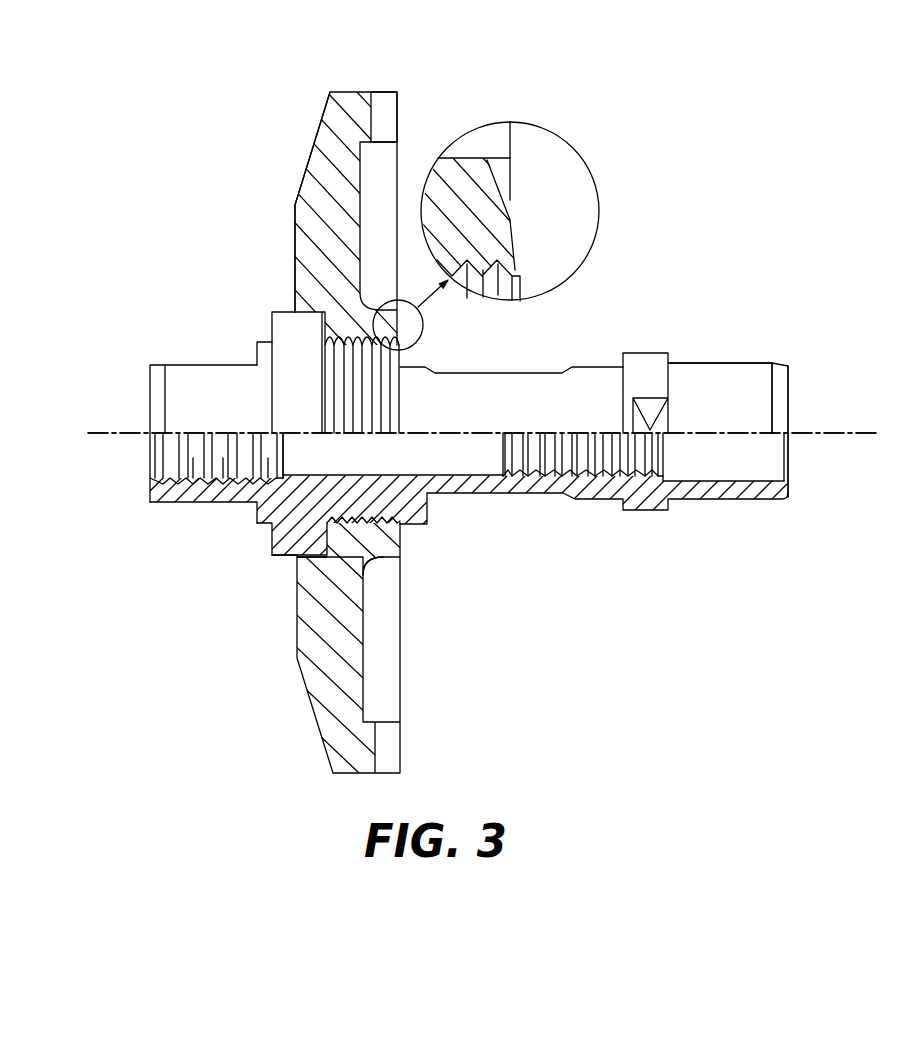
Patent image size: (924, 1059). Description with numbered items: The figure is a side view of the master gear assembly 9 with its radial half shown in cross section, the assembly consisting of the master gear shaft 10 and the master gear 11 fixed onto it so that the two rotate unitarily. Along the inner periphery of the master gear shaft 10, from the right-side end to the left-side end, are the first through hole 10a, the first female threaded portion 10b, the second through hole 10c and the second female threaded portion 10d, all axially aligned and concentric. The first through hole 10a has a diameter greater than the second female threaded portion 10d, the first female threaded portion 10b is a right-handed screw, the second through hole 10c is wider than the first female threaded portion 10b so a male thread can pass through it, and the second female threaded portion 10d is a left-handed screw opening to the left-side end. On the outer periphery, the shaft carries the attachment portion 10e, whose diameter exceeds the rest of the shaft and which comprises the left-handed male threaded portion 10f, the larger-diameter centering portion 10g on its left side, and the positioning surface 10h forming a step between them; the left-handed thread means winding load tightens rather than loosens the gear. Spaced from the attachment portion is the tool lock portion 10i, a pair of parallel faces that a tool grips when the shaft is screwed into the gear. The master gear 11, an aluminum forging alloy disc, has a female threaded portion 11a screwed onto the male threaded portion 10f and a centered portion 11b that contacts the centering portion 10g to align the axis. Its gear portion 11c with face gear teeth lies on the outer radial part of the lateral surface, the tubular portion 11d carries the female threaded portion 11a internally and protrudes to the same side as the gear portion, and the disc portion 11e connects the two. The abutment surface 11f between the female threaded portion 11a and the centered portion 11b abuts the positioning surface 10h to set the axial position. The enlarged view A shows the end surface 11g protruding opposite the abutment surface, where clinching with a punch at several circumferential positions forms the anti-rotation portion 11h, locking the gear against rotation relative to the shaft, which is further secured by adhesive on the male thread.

The master gear assembly 9 is at (642, 290).
The master gear shaft 10 is at (594, 531).
The first through hole 10a is at (750, 470).
The first female threaded portion 10b is at (627, 473).
The second through hole 10c is at (273, 528).
The second female threaded portion 10d is at (200, 478).
The attachment portion 10e is at (360, 557).
The male threaded portion 10f is at (365, 567).
The centering portion 10g is at (297, 557).
The positioning surface 10h is at (297, 658).
The tool lock portion 10i is at (650, 408).
The master gear 11 is at (262, 160).
The female threaded portion 11a is at (330, 320).
The centered portion 11b is at (307, 313).
The gear portion 11c is at (397, 112).
The tubular portion 11d is at (472, 158).
The disc portion 11e is at (295, 215).
The abutment surface 11f is at (277, 555).
The end surface 11g is at (512, 202).
The anti-rotation portion 11h is at (503, 197).
The enlarged view A is at (563, 137).